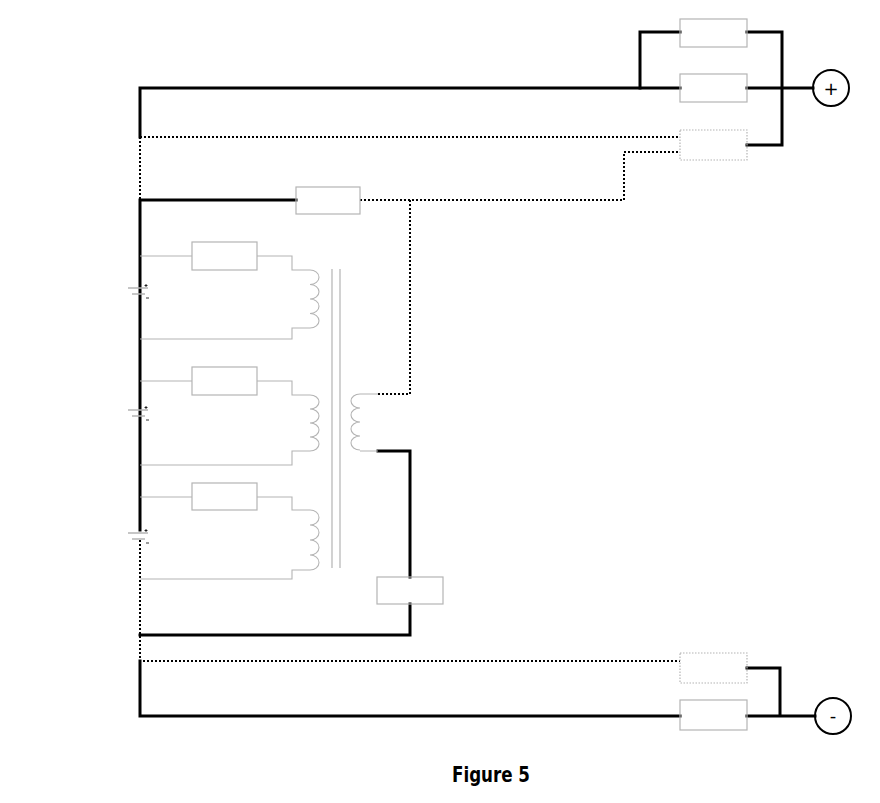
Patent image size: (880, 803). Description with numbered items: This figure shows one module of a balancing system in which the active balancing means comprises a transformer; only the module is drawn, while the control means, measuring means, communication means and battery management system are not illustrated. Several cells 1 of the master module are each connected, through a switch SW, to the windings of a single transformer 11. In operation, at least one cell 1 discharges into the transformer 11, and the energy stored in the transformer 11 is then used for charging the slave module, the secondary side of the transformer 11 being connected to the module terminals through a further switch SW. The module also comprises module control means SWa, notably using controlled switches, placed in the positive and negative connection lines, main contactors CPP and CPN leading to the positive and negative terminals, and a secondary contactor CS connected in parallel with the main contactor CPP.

The cell 1 is at (141, 290).
The transformer 11 is at (355, 420).
The switch SW is at (317, 395).
The module control means SWa is at (713, 406).
The secondary contactor CS is at (713, 33).
The main contactor CPP is at (713, 88).
The main contactor CPN is at (713, 715).